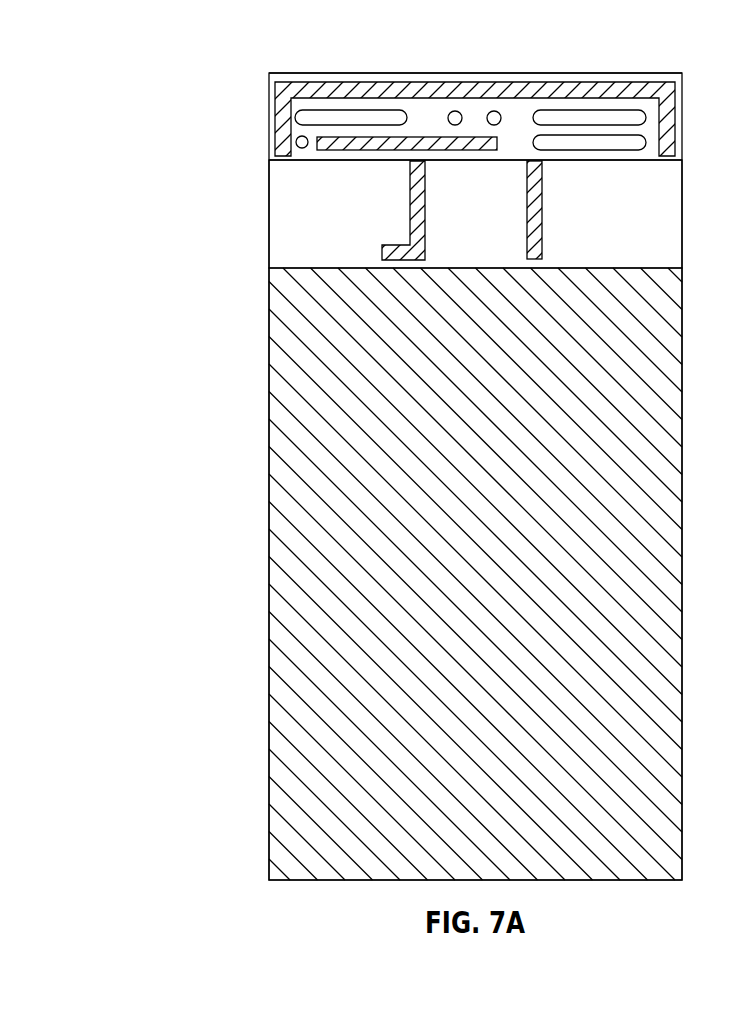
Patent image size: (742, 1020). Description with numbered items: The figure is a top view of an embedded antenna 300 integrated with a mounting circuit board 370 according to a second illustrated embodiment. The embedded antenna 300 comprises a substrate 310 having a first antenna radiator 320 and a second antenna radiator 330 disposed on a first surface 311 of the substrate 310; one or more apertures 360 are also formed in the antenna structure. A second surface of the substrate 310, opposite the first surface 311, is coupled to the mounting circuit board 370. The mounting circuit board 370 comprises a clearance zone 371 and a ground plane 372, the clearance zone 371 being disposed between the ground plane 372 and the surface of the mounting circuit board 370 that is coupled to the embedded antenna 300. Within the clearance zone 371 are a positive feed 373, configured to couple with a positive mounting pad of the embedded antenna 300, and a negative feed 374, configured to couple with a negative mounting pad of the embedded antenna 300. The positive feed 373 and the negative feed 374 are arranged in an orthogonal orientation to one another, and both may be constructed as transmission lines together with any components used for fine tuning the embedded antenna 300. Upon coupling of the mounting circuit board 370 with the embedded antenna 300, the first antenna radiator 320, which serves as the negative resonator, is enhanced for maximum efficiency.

The embedded antenna 300 is at (422, 446).
The substrate 310 is at (618, 75).
The first surface 311 is at (495, 74).
The first antenna radiator 320 is at (407, 76).
The second antenna radiator 330 is at (399, 135).
The one or more apertures 360 is at (557, 110).
The mounting circuit board 370 is at (439, 502).
The clearance zone 371 is at (316, 250).
The ground plane 372 is at (316, 362).
The positive feed 373 is at (410, 220).
The negative feed 374 is at (545, 237).